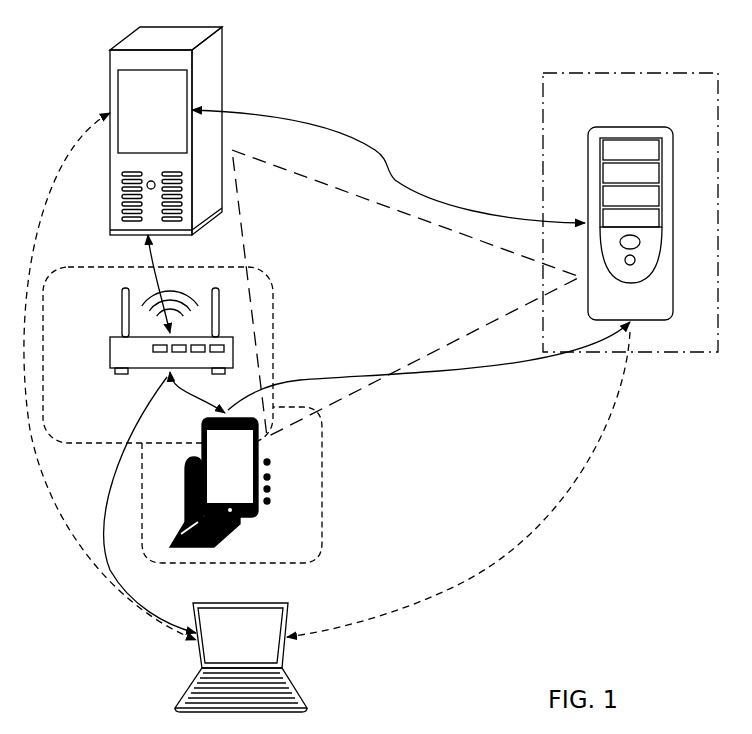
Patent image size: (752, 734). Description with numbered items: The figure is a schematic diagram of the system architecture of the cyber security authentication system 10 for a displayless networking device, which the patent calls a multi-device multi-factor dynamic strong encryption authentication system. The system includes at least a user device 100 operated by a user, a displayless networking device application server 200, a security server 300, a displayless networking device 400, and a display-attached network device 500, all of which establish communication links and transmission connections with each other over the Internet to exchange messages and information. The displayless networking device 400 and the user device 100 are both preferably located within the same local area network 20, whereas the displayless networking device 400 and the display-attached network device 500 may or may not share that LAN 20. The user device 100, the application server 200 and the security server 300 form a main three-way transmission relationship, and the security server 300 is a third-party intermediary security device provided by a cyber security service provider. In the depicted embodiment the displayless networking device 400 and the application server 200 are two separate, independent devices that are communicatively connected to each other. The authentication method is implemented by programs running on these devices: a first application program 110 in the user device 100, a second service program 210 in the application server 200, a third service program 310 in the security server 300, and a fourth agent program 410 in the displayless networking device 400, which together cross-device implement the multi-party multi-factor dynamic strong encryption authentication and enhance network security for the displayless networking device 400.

The cyber security authentication system 10 is at (366, 292).
The local area network 20 is at (322, 467).
The user device 100 is at (220, 482).
The first application program 110 is at (220, 482).
The displayless networking device application server 200 is at (166, 131).
The second service program 210 is at (166, 131).
The security server 300 is at (630, 212).
The third service program 310 is at (630, 212).
The displayless networking device 400 is at (158, 355).
The fourth agent program 410 is at (112, 350).
The display-attached network device 500 is at (241, 657).